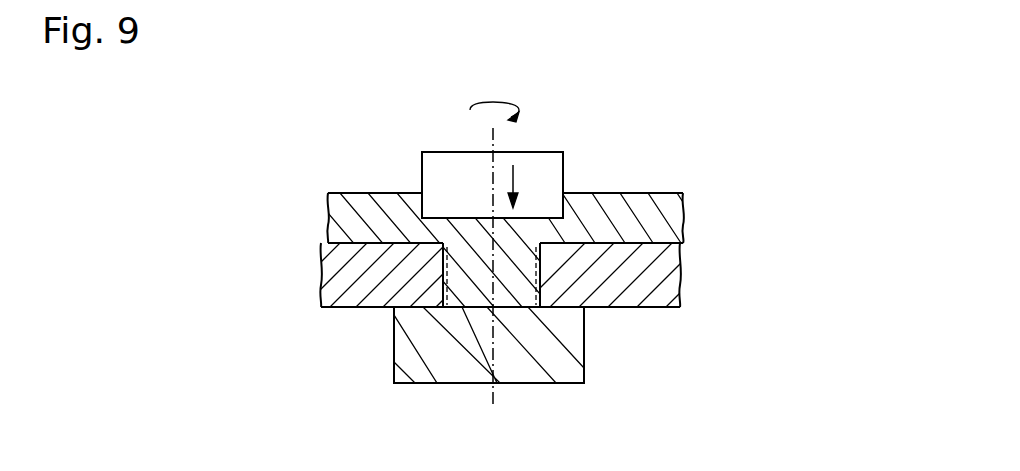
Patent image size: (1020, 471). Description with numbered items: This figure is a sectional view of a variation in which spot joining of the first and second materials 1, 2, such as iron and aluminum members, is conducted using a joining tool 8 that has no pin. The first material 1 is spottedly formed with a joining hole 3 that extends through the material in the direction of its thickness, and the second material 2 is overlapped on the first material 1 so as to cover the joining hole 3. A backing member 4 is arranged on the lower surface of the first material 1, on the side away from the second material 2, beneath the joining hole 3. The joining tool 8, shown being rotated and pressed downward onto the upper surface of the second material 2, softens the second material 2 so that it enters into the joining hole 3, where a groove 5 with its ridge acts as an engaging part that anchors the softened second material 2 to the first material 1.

The first material 1 is at (350, 283).
The second material 2 is at (352, 216).
The joining hole 3 is at (470, 282).
The backing member 4 is at (413, 362).
The groove 5 is at (530, 285).
The joining tool 8 is at (548, 167).